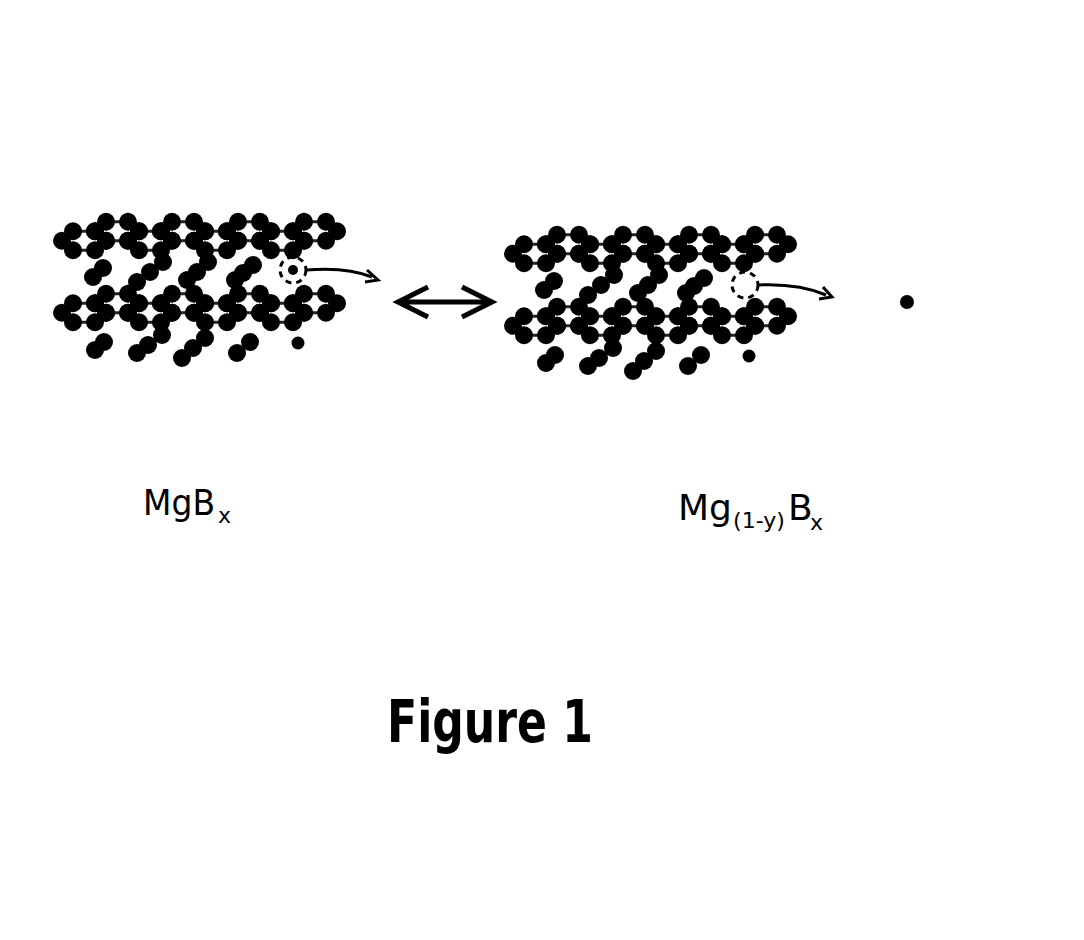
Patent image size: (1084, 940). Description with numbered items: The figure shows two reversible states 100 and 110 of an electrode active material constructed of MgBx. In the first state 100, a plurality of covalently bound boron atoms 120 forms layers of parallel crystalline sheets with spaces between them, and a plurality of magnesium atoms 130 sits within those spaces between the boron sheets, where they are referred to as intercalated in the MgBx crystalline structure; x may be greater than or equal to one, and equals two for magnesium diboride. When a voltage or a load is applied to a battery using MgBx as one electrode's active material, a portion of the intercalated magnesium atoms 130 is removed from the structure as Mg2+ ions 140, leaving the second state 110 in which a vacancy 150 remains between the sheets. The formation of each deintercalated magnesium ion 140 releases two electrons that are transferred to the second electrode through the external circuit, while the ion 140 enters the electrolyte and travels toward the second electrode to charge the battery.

The first electrode active material (first state) 100 is at (399, 239).
The first electrode active material (second state) 110 is at (732, 250).
The boron atom 120 is at (317, 227).
The intercalated magnesium atom 130 is at (93, 283).
The deintercalated magnesium ion 140 is at (905, 309).
The vacancy 150 is at (768, 277).